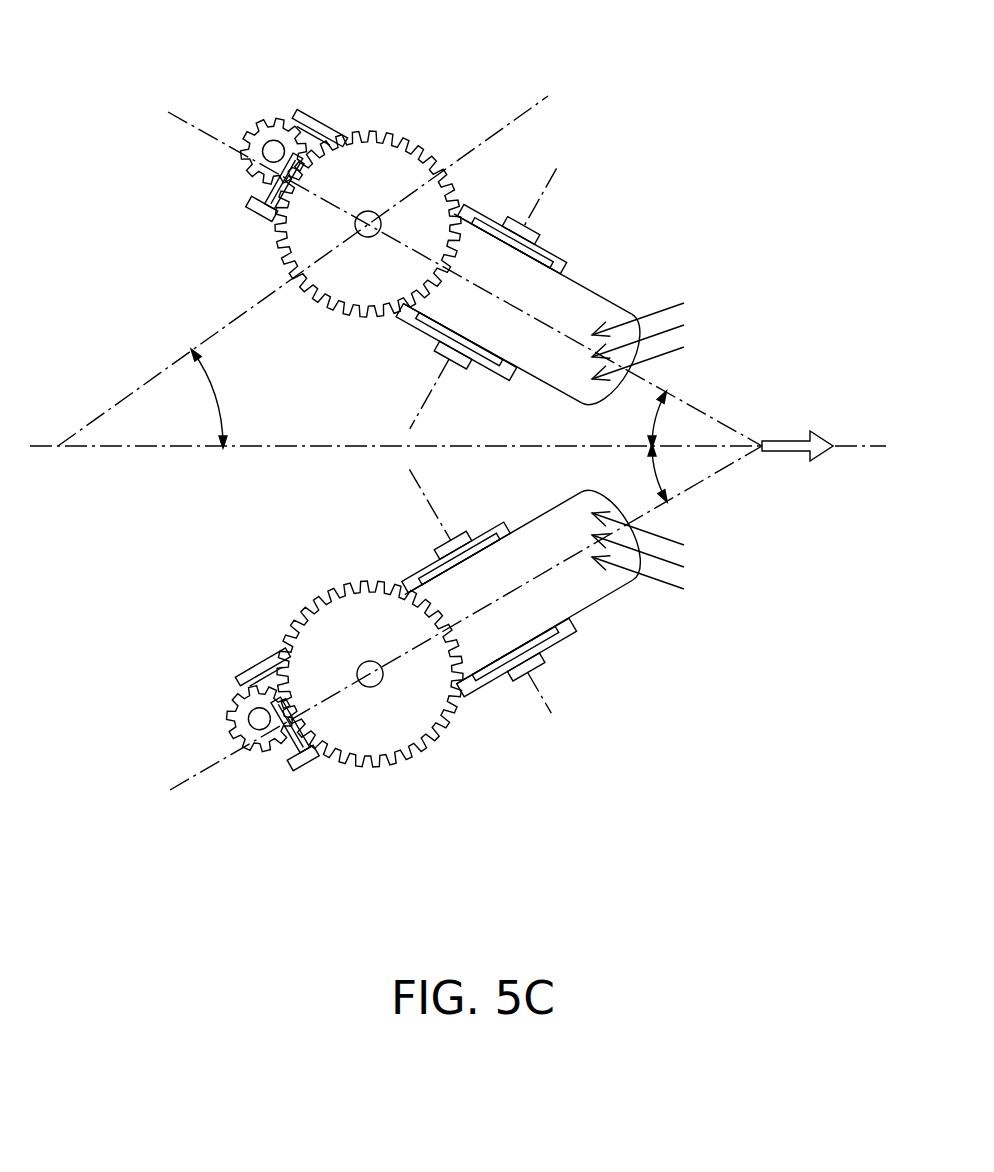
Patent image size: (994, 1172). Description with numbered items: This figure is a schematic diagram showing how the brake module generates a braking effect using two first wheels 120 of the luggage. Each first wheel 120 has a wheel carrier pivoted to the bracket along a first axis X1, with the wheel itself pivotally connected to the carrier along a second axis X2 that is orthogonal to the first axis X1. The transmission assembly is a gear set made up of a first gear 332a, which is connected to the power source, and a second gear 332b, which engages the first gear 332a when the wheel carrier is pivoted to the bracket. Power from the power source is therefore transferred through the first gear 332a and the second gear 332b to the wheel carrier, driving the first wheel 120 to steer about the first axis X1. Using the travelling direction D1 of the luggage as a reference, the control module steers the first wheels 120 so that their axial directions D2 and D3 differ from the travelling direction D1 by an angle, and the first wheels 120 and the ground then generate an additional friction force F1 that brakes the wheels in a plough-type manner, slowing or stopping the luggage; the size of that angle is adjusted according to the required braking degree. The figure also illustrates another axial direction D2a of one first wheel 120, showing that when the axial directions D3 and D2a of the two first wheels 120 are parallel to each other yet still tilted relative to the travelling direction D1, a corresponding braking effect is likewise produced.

The first wheel 120 is at (586, 236).
The first gear 332a is at (385, 157).
The second gear 332b is at (250, 131).
The first axis X1 is at (274, 140).
The second axis X2 is at (499, 448).
The travelling direction D1 is at (476, 446).
The axial direction D2 is at (446, 266).
The another axial direction D2a is at (329, 263).
The axial direction D3 is at (447, 630).
The additional friction force F1 is at (655, 446).